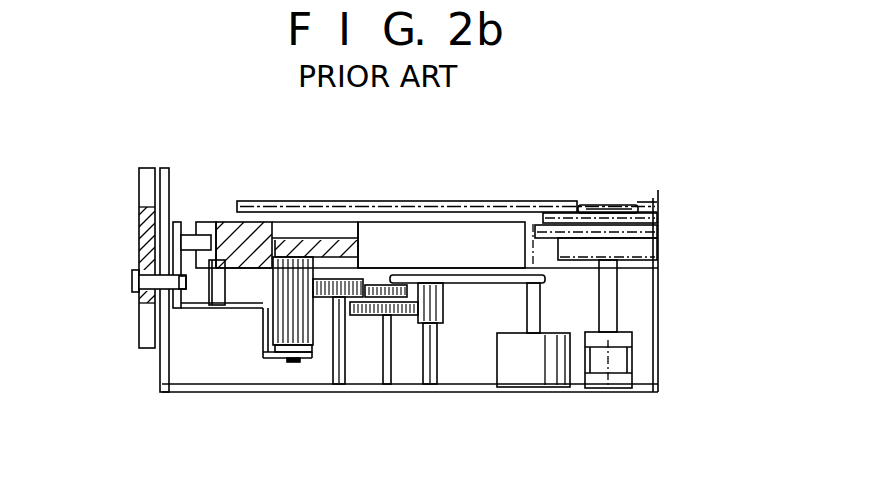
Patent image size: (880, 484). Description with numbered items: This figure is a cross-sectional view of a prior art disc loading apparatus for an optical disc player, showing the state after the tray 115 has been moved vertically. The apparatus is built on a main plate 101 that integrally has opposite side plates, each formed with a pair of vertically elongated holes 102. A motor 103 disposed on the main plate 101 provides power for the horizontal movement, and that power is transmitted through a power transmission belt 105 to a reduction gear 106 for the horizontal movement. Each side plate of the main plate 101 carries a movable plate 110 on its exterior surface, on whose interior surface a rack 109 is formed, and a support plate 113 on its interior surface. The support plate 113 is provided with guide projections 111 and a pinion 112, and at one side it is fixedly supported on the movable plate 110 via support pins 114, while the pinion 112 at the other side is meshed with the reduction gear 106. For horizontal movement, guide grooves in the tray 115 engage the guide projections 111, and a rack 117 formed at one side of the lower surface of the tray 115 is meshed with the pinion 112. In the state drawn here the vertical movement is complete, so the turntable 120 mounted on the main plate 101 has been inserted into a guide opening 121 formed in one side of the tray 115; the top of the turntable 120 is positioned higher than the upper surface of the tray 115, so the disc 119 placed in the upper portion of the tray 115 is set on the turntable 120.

The main plate 101 is at (467, 388).
The vertically elongated holes 102 is at (163, 253).
The motor 103 is at (533, 373).
The power transmission belt 105 is at (497, 278).
The reduction gear 106 is at (322, 297).
The rack 109 is at (552, 207).
The movable plate 110 is at (145, 190).
The guide projections 111 is at (216, 262).
The pinion 112 is at (310, 323).
The support plate 113 is at (240, 305).
The support pins 114 is at (147, 280).
The tray 115 is at (428, 237).
The rack 117 is at (268, 238).
The disc 119 is at (363, 206).
The turntable 120 is at (635, 250).
The guide opening 121 is at (550, 258).